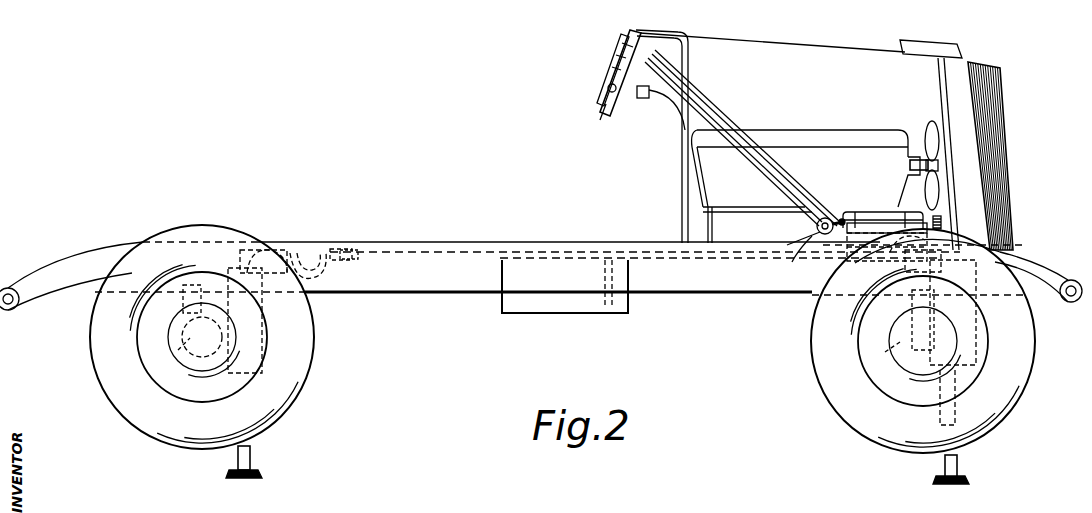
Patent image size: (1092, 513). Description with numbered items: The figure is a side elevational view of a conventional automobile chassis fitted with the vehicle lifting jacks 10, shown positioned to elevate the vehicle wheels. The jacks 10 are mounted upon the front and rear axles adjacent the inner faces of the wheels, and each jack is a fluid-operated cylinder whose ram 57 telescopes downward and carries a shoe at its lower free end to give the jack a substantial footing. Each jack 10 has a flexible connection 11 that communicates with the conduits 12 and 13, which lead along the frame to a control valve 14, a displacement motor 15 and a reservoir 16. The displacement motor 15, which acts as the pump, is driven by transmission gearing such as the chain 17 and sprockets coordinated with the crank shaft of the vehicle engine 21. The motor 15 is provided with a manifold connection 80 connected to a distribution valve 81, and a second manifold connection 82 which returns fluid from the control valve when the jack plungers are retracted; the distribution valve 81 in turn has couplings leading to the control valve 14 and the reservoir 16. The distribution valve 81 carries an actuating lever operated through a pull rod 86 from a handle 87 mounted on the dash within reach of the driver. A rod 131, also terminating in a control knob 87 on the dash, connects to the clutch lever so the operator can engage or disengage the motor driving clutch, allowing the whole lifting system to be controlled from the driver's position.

The vehicle lifting jack 10 is at (246, 335).
The flexible connection 11 is at (311, 268).
The conduit 12 is at (748, 255).
The conduit 13 is at (415, 250).
The control valve 14 is at (617, 108).
The displacement motor 15 is at (862, 236).
The reservoir 16 is at (548, 298).
The chain 17 is at (941, 218).
The vehicle engine 21 is at (852, 157).
The ram 57 is at (250, 450).
The manifold connection 80 is at (910, 212).
The distribution valve 81 is at (816, 220).
The second manifold connection 82 is at (804, 263).
The pull rod 86 is at (762, 162).
The handle 87 is at (625, 46).
The rod 131 is at (737, 117).